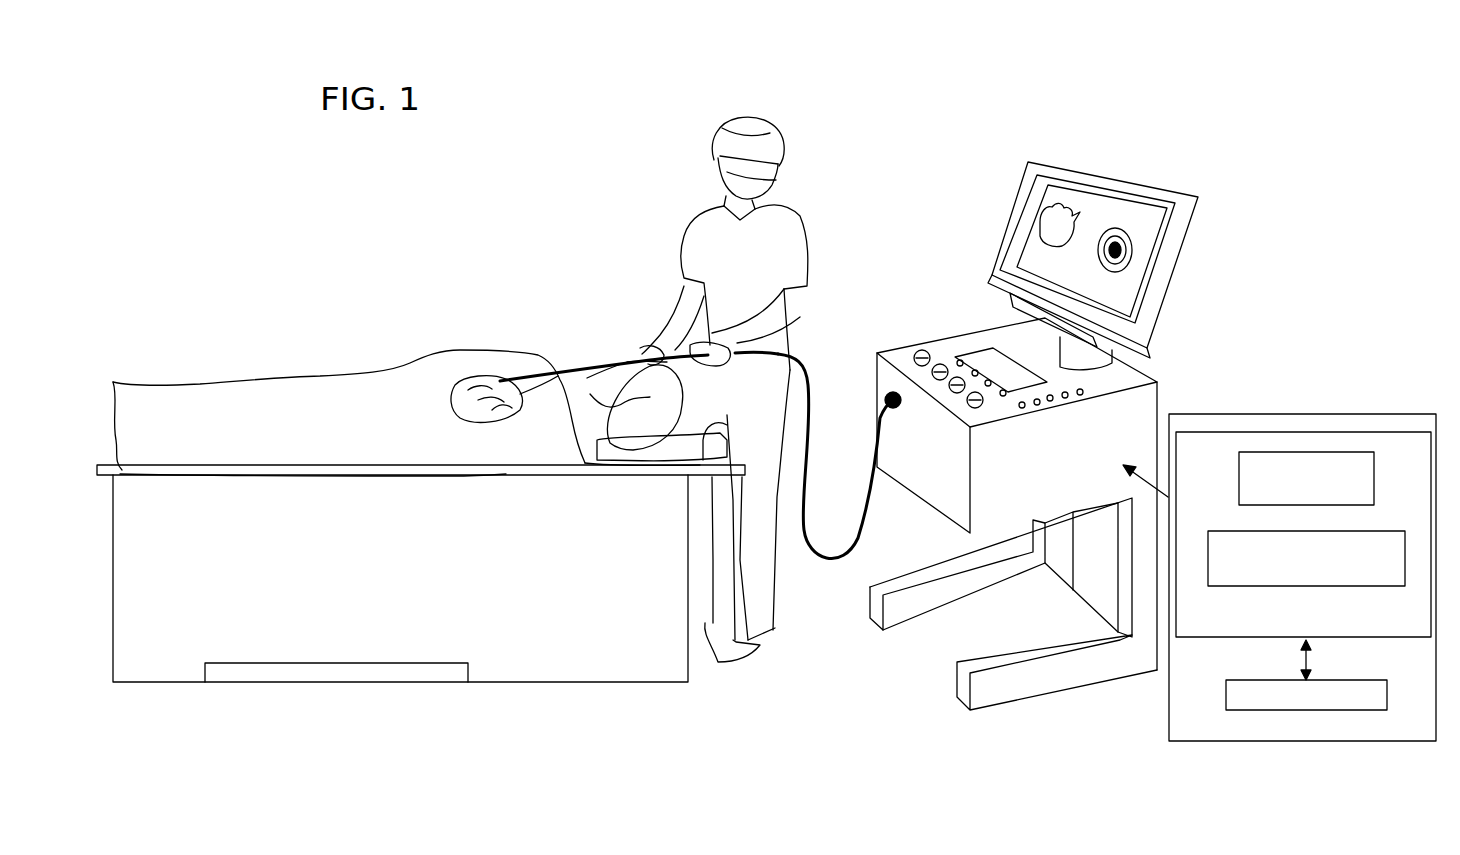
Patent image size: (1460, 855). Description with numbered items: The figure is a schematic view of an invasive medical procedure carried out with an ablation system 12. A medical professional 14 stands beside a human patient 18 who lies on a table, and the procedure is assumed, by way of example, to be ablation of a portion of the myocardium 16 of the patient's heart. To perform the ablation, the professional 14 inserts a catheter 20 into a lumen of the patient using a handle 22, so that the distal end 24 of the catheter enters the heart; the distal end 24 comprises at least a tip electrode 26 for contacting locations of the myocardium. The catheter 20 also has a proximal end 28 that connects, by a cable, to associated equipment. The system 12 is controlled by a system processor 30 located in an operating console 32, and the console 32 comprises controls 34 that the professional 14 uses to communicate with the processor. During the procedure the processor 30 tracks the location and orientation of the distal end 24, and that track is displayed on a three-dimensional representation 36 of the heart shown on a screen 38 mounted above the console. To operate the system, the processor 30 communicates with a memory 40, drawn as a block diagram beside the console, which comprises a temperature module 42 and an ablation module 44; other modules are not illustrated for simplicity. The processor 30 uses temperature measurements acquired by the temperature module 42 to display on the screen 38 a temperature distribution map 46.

The system 12 is at (890, 160).
The medical professional 14 is at (742, 130).
The myocardium 16 is at (477, 353).
The human patient 18 is at (205, 402).
The catheter 20 is at (580, 362).
The handle 22 is at (680, 348).
The distal end 24 is at (505, 328).
The tip electrode 26 is at (421, 328).
The proximal end 28 is at (875, 413).
The system processor 30 is at (1240, 710).
The operating console 32 is at (955, 340).
The controls 34 is at (922, 350).
The three-dimensional representation 36 is at (1041, 185).
The screen 38 is at (1198, 227).
The memory 40 is at (1197, 638).
The temperature module 42 is at (1390, 531).
The ablation module 44 is at (1376, 473).
The temperature distribution map 46 is at (1112, 228).